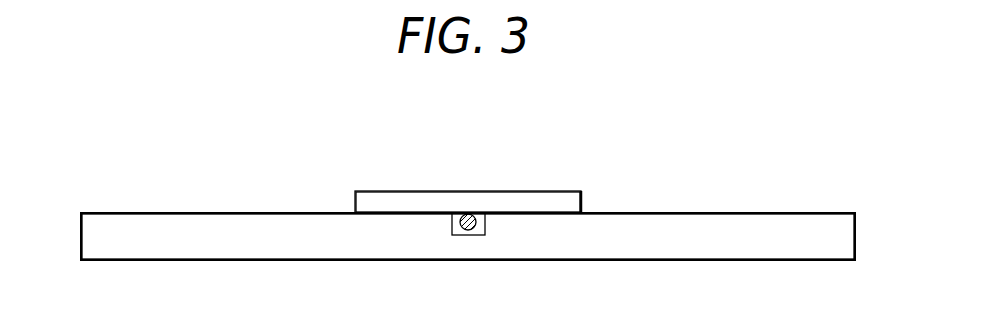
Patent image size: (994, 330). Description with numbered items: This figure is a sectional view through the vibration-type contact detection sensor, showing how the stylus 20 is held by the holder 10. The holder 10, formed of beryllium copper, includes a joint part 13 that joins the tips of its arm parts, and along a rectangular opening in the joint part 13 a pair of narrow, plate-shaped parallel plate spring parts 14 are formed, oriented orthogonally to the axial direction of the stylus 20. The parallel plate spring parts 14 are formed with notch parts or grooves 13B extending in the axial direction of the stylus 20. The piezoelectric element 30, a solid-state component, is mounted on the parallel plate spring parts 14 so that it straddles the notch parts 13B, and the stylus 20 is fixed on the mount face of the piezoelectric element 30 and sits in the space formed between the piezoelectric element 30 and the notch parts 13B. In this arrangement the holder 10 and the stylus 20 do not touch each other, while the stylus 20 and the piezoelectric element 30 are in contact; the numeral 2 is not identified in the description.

The sensor unit 2 is at (276, 173).
The holder 10 is at (657, 173).
The joint part 13 is at (178, 243).
The notch part 13B is at (480, 215).
The parallel plate spring part 14 is at (378, 243).
The stylus 20 is at (468, 233).
The piezoelectric element 30 is at (398, 200).